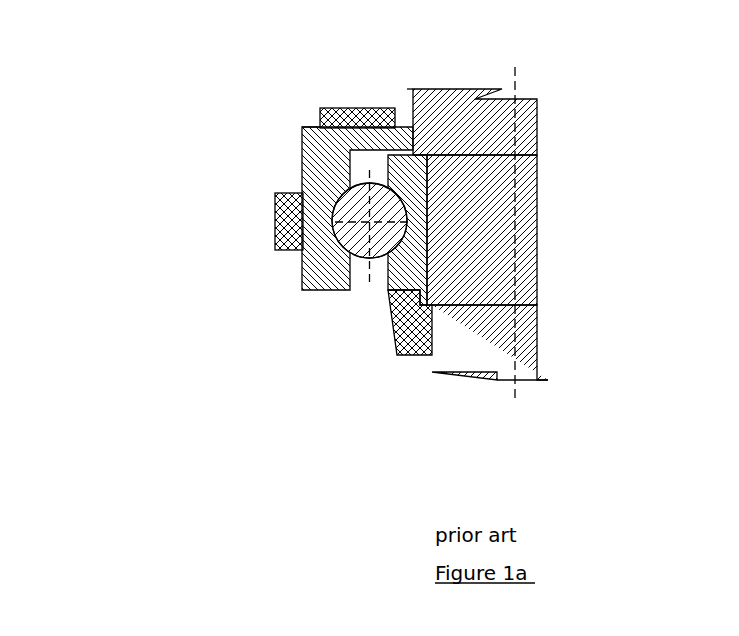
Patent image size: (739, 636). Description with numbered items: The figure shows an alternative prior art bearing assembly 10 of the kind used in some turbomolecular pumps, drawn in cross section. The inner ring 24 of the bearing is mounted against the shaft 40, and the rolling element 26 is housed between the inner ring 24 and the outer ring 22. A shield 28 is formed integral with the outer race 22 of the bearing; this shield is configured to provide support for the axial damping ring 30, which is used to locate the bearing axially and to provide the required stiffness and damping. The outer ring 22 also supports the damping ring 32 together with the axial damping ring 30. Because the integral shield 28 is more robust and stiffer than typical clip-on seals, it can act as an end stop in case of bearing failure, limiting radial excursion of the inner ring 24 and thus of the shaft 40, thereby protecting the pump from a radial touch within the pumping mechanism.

The bearing assembly 10 is at (210, 105).
The outer race 22 is at (330, 278).
The inner ring 24 is at (435, 312).
The rolling element 26 is at (402, 313).
The shield 28 is at (360, 142).
The axial damping ring 30 is at (320, 124).
The damping ring 32 is at (275, 223).
The shaft 40 is at (485, 280).